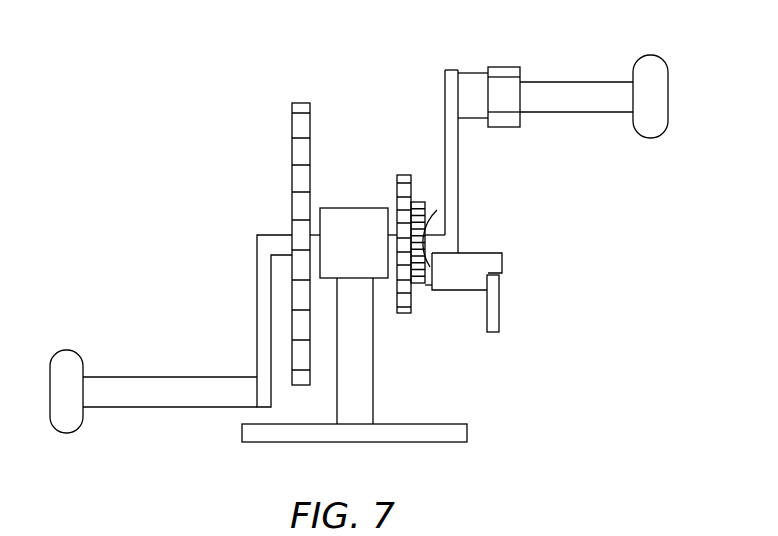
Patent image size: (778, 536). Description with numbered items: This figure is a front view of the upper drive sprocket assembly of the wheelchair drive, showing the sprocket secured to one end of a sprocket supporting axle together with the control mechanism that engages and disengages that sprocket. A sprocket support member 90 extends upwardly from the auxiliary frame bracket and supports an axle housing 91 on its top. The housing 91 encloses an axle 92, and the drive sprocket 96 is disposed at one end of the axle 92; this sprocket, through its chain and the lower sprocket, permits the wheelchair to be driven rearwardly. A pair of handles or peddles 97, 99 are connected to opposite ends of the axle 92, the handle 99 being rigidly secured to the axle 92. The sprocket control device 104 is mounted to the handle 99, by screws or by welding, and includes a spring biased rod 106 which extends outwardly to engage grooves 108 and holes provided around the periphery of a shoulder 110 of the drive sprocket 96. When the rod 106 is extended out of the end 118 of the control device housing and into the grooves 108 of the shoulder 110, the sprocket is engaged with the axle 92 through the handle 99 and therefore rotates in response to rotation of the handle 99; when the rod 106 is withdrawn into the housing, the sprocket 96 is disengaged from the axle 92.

The sprocket support member 90 is at (352, 365).
The axle housing 91 is at (353, 207).
The axle 92 is at (315, 238).
The drive sprocket 96 is at (292, 125).
The handle 97 is at (172, 383).
The handle 99 is at (613, 108).
The control device 104 is at (520, 312).
The spring biased rod 106 is at (423, 285).
The grooves 108 is at (420, 207).
The shoulder 110 is at (420, 203).
The end of housing 118 is at (425, 235).